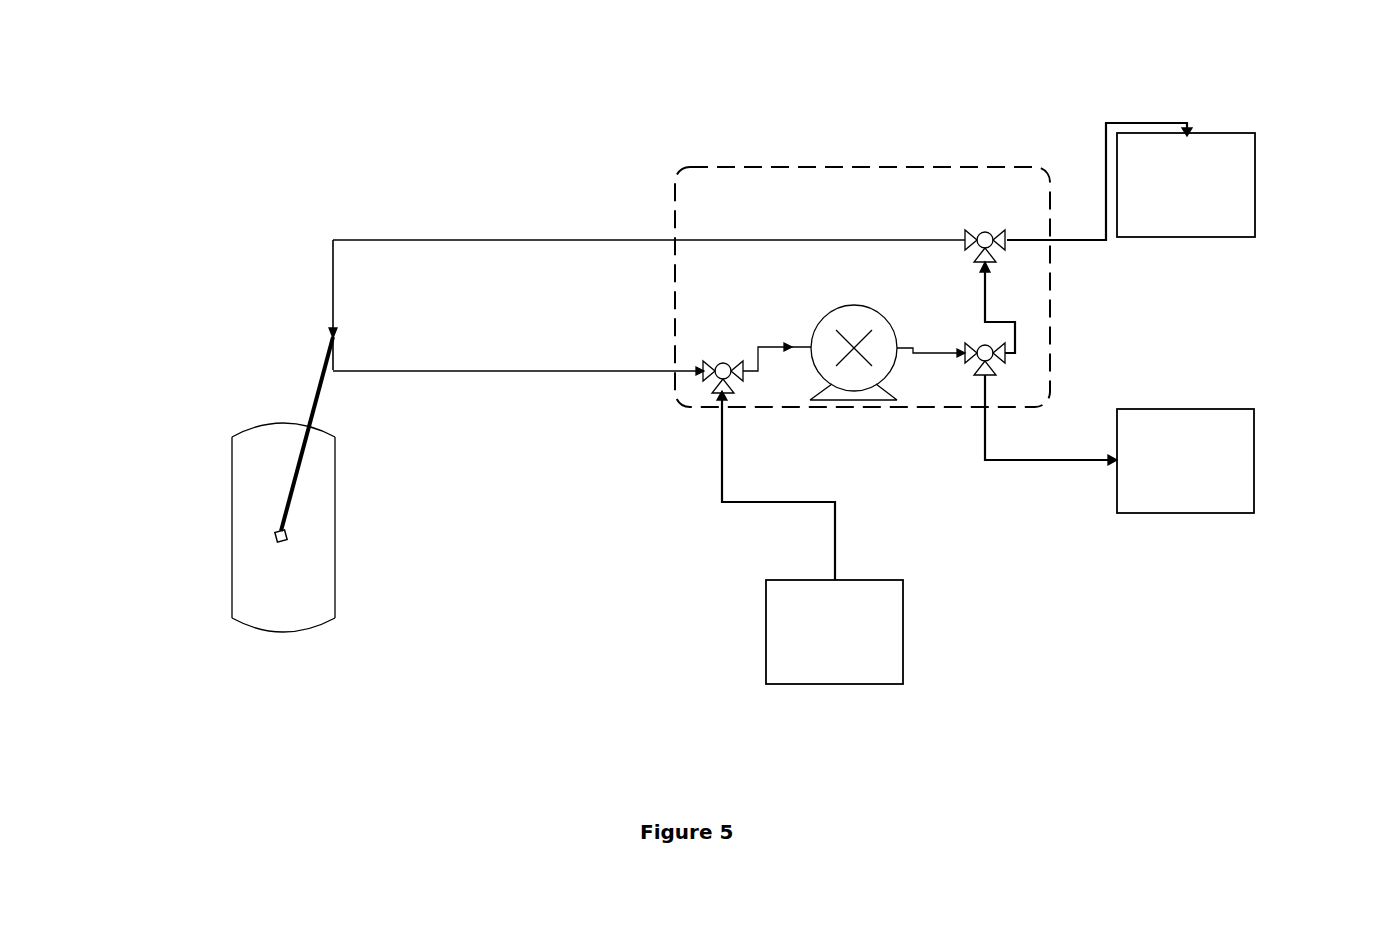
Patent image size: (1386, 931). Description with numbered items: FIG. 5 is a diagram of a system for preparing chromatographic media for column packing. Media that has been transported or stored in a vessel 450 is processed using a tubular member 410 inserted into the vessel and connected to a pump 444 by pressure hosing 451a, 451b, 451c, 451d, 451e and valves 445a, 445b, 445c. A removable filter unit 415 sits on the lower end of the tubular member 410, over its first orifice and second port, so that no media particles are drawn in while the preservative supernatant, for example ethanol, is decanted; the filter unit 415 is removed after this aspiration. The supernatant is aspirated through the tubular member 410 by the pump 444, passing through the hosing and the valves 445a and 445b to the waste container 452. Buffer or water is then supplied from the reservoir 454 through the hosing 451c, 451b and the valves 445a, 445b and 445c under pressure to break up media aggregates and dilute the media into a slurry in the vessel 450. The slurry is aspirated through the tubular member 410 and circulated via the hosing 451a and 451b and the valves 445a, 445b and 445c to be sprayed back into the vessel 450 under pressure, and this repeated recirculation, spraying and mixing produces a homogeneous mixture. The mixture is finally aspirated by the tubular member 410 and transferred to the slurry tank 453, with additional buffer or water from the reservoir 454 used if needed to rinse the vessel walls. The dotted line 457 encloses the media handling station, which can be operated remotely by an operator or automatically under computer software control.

The tubular member 410 is at (315, 389).
The removable filter unit 415 is at (275, 532).
The vessel 450 is at (232, 575).
The pressure hosing 451a is at (486, 375).
The pressure hosing 451b is at (478, 236).
The pressure hosing 451c is at (715, 485).
The pressure hosing 451d is at (1027, 465).
The pressure hosing 451e is at (1103, 141).
The pump 444 is at (853, 318).
The valve 445a is at (722, 363).
The valve 445b is at (984, 384).
The valve 445c is at (985, 232).
The waste container 452 is at (1254, 462).
The slurry tank 453 is at (1255, 185).
The reservoir 454 is at (903, 642).
The media handling station 457 is at (774, 160).